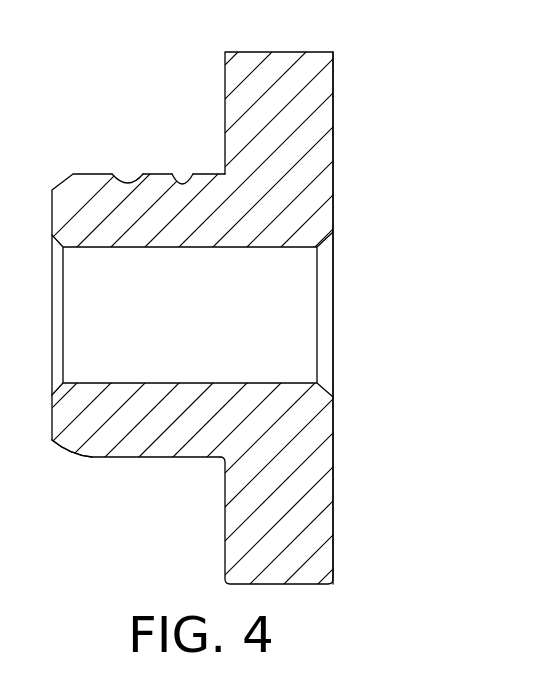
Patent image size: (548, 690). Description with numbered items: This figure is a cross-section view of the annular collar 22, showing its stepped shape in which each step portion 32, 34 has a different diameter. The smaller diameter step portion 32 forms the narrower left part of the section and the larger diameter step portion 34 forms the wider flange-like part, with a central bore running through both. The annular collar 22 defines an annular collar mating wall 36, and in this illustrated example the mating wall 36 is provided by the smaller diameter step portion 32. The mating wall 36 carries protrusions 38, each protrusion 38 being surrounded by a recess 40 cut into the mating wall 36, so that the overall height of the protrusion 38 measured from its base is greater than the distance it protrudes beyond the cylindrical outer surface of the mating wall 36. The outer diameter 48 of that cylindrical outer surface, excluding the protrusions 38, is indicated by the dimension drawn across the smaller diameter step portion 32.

The annular collar 22 is at (274, 300).
The smaller diameter step portion 32 is at (163, 422).
The larger diameter step portion 34 is at (307, 63).
The annular collar mating wall 36 is at (98, 457).
The protrusion 38 is at (158, 177).
The recess 40 is at (182, 177).
The outer diameter 48 is at (128, 183).